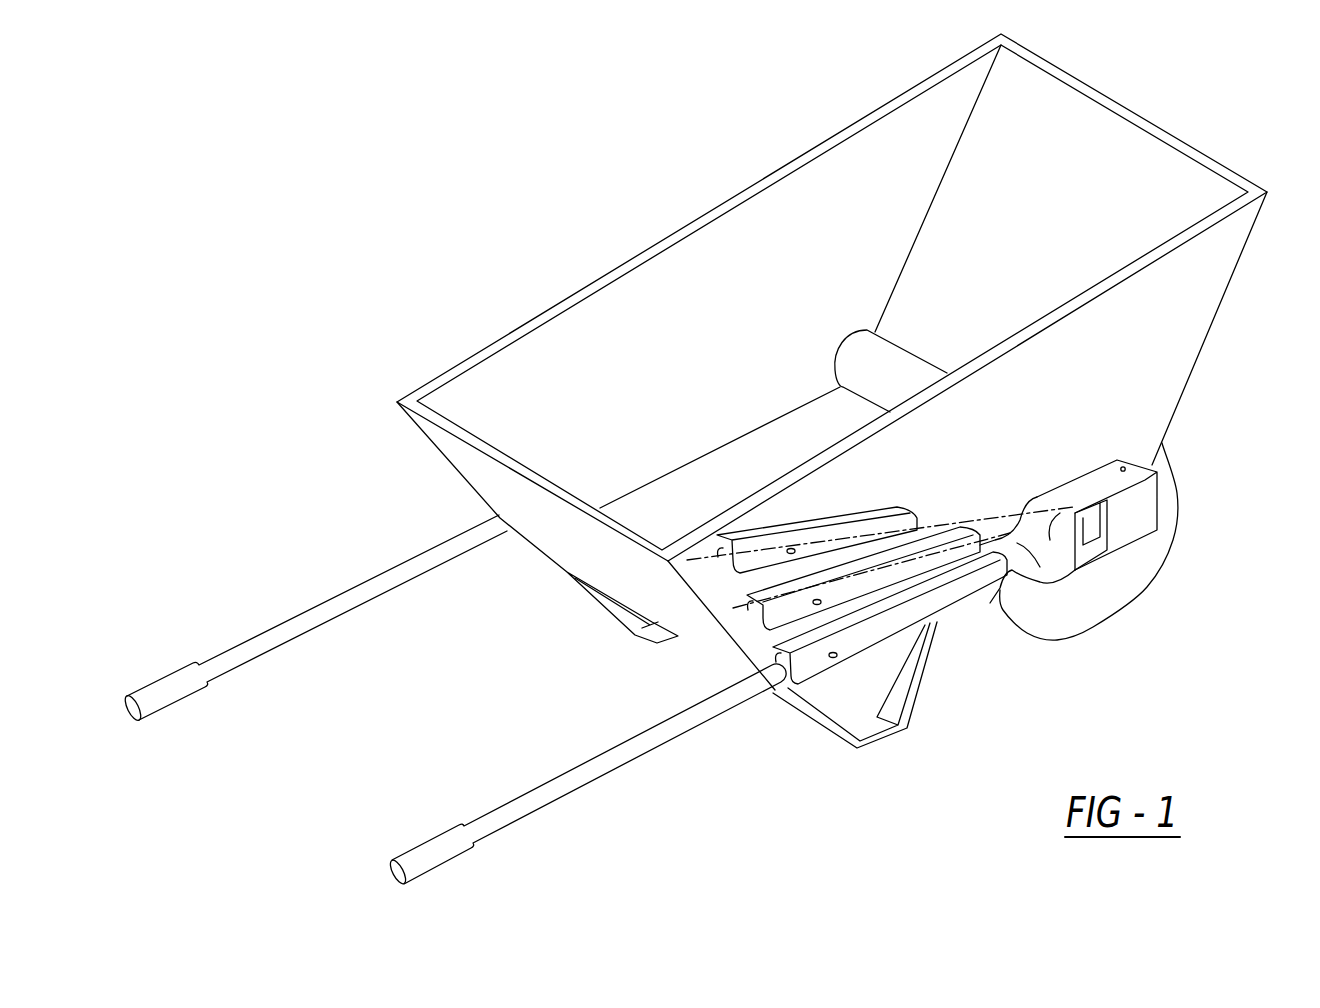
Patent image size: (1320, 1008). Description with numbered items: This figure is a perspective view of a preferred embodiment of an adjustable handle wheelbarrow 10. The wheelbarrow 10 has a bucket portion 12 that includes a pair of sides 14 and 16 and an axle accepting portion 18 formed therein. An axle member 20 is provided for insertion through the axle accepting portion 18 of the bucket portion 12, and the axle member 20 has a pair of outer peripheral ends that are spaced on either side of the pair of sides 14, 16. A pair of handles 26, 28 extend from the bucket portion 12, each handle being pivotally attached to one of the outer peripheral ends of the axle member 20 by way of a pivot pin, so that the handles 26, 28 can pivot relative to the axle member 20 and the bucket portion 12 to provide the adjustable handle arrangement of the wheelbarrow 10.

The wheelbarrow 10 is at (476, 126).
The bucket portion 12 is at (1104, 80).
The side 14 is at (1170, 352).
The side 16 is at (750, 240).
The axle accepting portion 18 is at (900, 362).
The axle member 20 is at (1140, 510).
The handle 26 is at (612, 775).
The handle 28 is at (312, 633).